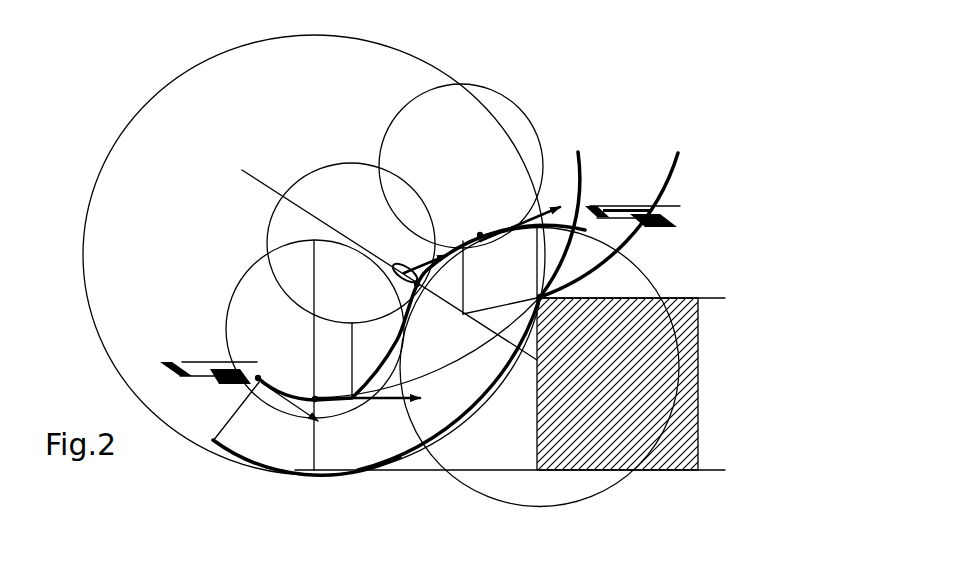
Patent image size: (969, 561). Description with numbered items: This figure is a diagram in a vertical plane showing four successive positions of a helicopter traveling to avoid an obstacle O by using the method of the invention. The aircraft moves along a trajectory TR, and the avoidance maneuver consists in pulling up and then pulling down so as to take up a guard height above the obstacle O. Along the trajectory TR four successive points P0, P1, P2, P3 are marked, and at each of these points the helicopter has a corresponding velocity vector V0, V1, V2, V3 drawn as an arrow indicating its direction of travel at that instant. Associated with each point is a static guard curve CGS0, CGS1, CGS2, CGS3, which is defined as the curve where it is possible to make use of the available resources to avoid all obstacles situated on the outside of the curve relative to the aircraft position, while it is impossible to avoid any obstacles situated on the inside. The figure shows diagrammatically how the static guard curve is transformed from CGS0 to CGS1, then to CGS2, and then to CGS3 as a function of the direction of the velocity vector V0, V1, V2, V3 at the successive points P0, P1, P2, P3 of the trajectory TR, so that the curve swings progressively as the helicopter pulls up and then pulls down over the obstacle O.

The trajectory TR is at (398, 336).
The static guard curve CGS0 is at (288, 476).
The static guard curve CGS1 is at (455, 428).
The static guard curve CGS2 is at (592, 137).
The static guard curve CGS3 is at (680, 153).
The point of the trajectory P0 is at (264, 376).
The point of the trajectory P1 is at (323, 392).
The point of the trajectory P2 is at (418, 290).
The point of the trajectory P3 is at (480, 230).
The velocity vector V0 is at (297, 408).
The velocity vector V1 is at (363, 402).
The velocity vector V2 is at (437, 258).
The velocity vector V3 is at (524, 211).
The obstacle O is at (558, 315).